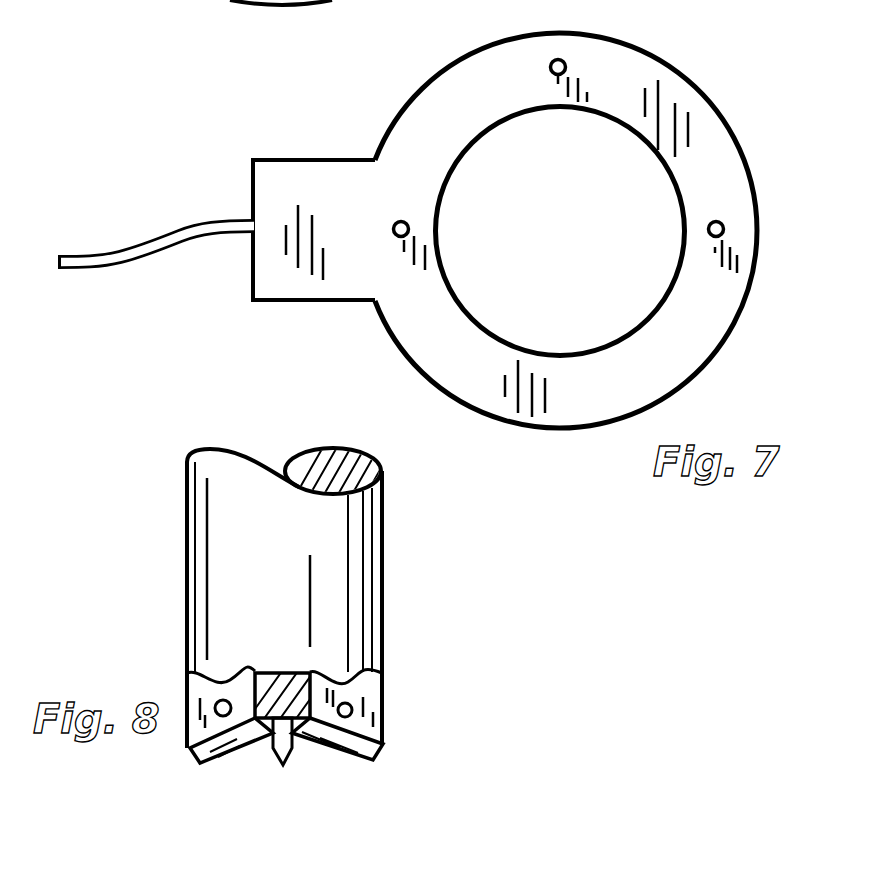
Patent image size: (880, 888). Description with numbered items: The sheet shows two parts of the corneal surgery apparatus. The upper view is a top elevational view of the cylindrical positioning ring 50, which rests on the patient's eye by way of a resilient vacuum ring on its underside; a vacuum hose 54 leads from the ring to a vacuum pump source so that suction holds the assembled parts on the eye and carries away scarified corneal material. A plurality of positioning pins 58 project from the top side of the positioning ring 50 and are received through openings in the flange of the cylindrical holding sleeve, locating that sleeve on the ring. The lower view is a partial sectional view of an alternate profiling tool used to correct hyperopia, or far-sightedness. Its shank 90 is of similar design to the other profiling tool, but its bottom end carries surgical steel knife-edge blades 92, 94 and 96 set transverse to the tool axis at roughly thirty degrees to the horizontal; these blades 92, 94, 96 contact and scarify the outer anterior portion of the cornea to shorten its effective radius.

In FIG. 7, the cylindrical positioning ring 50 is at (705, 115).
In FIG. 7, the vacuum hose 54 is at (117, 268).
In FIG. 7, the positioning pins 58 is at (565, 61).
In FIG. 8, the shank 90 is at (383, 574).
In FIG. 8, the knife-edge blade 92 is at (357, 763).
In FIG. 8, the knife-edge blade 94 is at (218, 763).
In FIG. 8, the knife-edge blade 96 is at (272, 752).